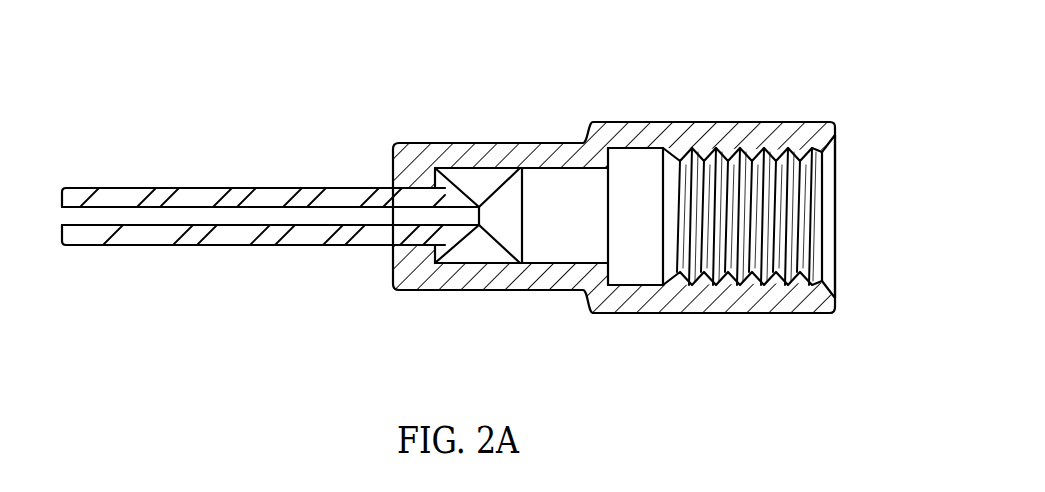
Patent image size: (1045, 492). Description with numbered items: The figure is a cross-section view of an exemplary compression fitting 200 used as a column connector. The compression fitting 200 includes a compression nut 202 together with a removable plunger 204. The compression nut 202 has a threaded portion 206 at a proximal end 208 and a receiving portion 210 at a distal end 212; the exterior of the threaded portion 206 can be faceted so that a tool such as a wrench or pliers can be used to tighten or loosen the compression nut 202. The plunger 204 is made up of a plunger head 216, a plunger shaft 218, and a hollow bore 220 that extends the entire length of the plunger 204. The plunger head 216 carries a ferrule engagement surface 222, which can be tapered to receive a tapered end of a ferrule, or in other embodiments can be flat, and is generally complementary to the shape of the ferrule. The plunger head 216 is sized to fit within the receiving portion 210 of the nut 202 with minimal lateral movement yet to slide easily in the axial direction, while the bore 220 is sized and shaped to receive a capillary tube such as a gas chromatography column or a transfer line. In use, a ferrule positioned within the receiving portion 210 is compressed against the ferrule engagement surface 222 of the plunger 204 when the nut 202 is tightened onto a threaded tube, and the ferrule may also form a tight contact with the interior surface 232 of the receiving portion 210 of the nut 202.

The compression fitting 200 is at (117, 45).
The compression nut 202 is at (798, 313).
The removable plunger 204 is at (235, 188).
The threaded portion 206 is at (605, 107).
The proximal end 208 is at (837, 185).
The receiving portion 210 is at (393, 107).
The distal end 212 is at (393, 163).
The plunger head 216 is at (437, 300).
The plunger shaft 218 is at (62, 303).
The hollow bore 220 is at (197, 220).
The ferrule engagement surface 222 is at (505, 185).
The interior surface 232 is at (592, 296).